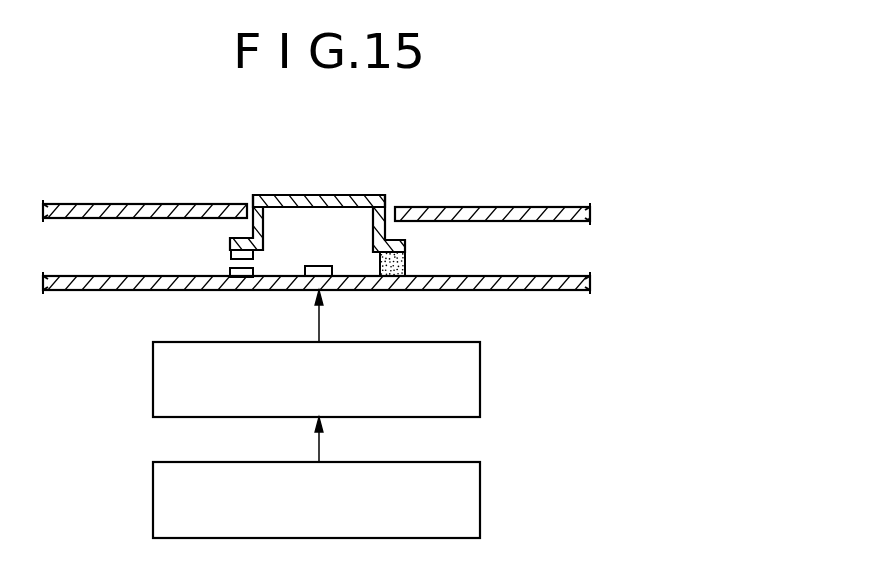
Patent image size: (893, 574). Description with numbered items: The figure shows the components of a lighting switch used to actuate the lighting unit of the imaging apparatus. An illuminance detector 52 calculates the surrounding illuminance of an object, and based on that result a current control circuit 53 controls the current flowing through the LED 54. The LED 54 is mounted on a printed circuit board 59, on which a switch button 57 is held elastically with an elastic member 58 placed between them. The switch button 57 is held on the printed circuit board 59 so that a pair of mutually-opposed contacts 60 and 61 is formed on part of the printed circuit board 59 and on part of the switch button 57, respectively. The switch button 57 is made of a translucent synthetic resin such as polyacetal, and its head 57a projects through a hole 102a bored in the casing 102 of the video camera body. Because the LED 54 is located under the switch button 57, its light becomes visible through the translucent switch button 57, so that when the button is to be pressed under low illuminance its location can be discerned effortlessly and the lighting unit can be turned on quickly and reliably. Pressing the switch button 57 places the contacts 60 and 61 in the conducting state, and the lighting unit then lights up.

The hole 102a is at (245, 203).
The casing 102 is at (487, 211).
The switch button 57 is at (348, 195).
The head 57a is at (313, 195).
The elastic member 58 is at (407, 265).
The printed circuit board 59 is at (514, 278).
The contact 60 is at (233, 268).
The contact 61 is at (232, 255).
The LED 54 is at (334, 270).
The current control circuit 53 is at (480, 390).
The illuminance detector 52 is at (480, 510).